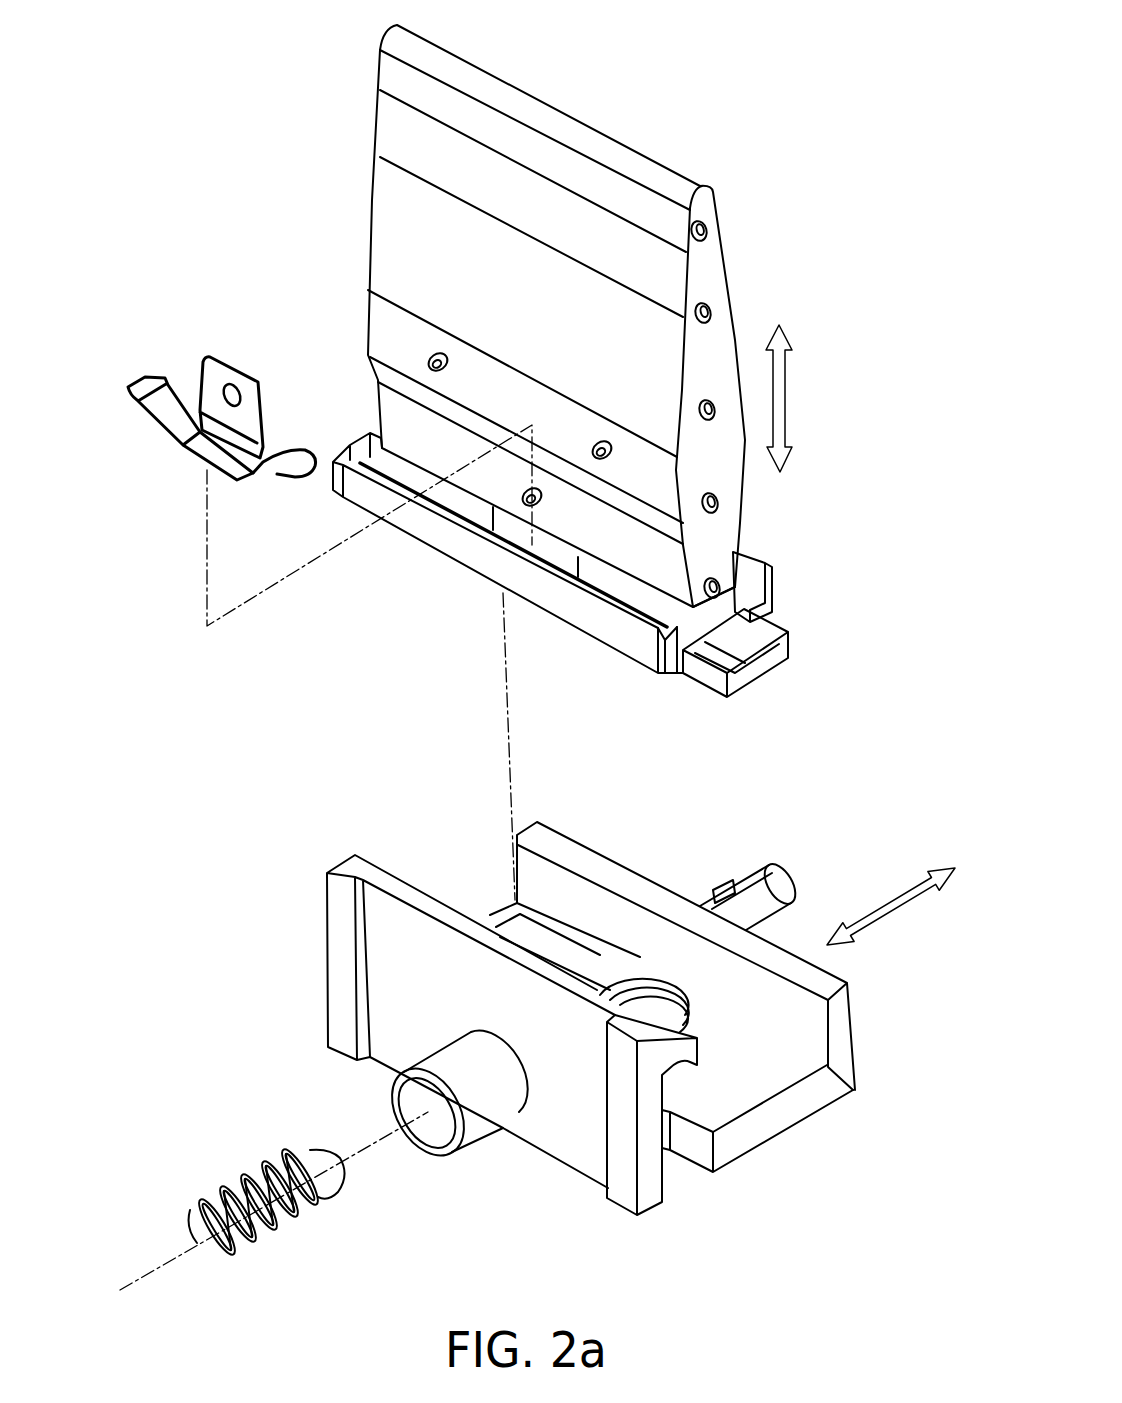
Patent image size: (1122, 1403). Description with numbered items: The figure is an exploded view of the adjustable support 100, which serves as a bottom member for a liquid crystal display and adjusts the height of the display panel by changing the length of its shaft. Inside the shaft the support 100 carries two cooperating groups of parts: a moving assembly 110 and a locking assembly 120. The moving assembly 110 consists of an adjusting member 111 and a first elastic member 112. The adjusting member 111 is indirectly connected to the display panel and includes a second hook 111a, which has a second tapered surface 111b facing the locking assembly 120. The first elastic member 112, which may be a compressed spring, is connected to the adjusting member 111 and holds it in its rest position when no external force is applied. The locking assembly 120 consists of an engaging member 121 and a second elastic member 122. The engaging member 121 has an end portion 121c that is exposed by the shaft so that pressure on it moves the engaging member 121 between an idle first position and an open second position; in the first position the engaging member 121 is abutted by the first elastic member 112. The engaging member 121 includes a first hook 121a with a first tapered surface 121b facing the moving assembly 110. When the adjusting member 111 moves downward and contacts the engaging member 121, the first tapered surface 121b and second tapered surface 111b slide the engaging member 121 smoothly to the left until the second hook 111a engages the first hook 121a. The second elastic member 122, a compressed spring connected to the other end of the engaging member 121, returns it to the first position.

The adjustable support 100 is at (152, 34).
The moving assembly 110 is at (272, 245).
The adjusting member 111 is at (400, 250).
The second hook 111a is at (783, 630).
The second tapered surface 111b is at (665, 678).
The first elastic member 112 is at (157, 383).
The locking assembly 120 is at (318, 1066).
The engaging member 121 is at (402, 1074).
The first hook 121a is at (690, 1072).
The first tapered surface 121b is at (697, 1030).
The end portion 121c is at (783, 897).
The second elastic member 122 is at (207, 1195).